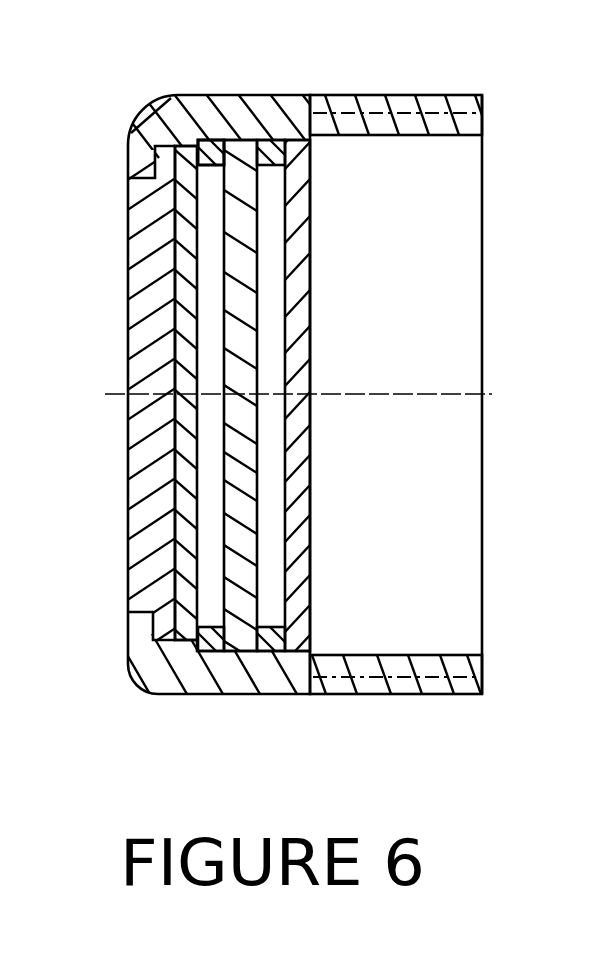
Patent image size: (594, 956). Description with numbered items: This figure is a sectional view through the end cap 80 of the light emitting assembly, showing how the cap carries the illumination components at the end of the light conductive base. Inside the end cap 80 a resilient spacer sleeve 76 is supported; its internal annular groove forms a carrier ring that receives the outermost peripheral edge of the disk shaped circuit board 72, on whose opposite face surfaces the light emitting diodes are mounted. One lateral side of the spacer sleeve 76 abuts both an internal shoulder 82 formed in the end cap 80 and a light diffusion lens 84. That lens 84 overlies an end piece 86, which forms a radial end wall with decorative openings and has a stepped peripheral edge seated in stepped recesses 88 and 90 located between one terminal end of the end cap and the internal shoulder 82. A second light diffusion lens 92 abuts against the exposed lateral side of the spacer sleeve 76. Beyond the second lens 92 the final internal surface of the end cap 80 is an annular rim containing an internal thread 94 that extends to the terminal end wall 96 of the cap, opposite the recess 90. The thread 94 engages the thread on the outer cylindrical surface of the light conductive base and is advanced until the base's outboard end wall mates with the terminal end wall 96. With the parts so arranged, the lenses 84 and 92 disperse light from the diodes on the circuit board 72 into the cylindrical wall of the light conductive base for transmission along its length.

The circuit board 72 is at (261, 220).
The resilient spacer sleeve 76 is at (206, 145).
The end cap 80 is at (313, 99).
The internal shoulder 82 is at (215, 640).
The light diffusion lens 84 is at (199, 524).
The end piece 86 is at (124, 251).
The stepped recess 88 is at (136, 181).
The stepped recess 90 is at (192, 137).
The second light diffusion lens 92 is at (309, 320).
The internal thread 94 is at (346, 662).
The terminal end wall 96 is at (486, 668).